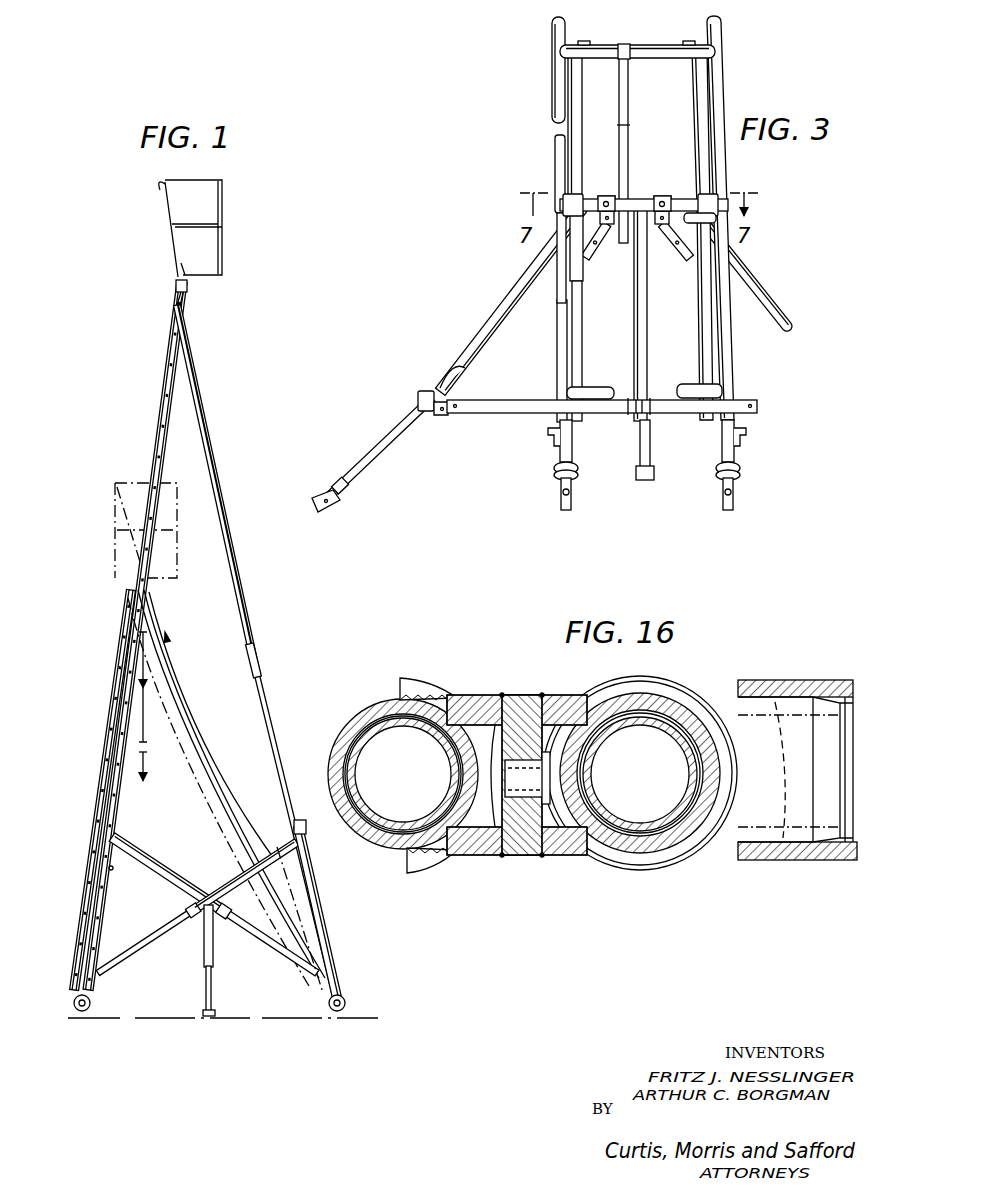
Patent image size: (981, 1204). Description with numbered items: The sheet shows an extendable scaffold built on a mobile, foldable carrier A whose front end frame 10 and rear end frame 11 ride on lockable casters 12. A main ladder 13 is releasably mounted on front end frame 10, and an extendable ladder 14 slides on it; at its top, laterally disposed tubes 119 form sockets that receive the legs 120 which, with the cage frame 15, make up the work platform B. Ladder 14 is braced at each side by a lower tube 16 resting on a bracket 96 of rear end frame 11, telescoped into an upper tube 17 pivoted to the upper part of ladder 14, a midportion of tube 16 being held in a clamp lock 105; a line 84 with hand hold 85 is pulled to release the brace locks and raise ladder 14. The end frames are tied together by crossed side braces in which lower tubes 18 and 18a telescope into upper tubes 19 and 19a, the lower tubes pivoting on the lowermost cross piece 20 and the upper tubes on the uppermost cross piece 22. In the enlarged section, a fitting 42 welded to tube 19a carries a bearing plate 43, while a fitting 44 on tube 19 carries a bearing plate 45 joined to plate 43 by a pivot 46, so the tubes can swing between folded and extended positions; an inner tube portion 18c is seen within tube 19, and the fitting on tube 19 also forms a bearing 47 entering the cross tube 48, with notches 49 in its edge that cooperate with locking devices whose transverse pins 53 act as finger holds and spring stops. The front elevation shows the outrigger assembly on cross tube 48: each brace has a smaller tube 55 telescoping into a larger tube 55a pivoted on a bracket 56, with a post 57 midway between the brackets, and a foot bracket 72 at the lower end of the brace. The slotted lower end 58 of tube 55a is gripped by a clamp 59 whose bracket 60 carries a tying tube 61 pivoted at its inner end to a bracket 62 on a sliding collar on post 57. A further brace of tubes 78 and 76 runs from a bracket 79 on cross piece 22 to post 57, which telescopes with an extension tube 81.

In FIG. 1, the front end frame 10 is at (105, 915).
In FIG. 3, the front end frame 10 is at (552, 95).
In FIG. 1, the rear end frame 11 is at (330, 945).
In FIG. 3, the rear end frame 11 is at (572, 440).
In FIG. 1, the casters 12 is at (82, 1012).
In FIG. 1, the main ladder 13 is at (118, 828).
In FIG. 1, the extendable ladder 14 is at (160, 377).
In FIG. 1, the cage or frame 15 is at (223, 247).
In FIG. 1, the lower tube 16 is at (268, 698).
In FIG. 1, the upper tube 17 is at (230, 477).
In FIG. 1, the lower tube 18 is at (128, 956).
In FIG. 3, the lower tube 18 is at (585, 310).
In FIG. 1, the lower tube 18a is at (238, 940).
In FIG. 3, the lower tube 18a is at (566, 330).
In FIG. 16, the lower tube 18a is at (373, 815).
In FIG. 16, the inner tube 18c is at (687, 738).
In FIG. 1, the upper tube 19 is at (235, 882).
In FIG. 3, the upper tube 19 is at (568, 118).
In FIG. 16, the upper tube 19 is at (660, 700).
In FIG. 1, the upper tube 19a is at (165, 868).
In FIG. 3, the upper tube 19a is at (555, 150).
In FIG. 16, the upper tube 19a is at (378, 712).
In FIG. 3, the lowermost cross piece 20 is at (687, 383).
In FIG. 3, the uppermost cross piece 22 is at (665, 45).
In FIG. 3, the fitting 42 is at (562, 201).
In FIG. 16, the fitting 42 is at (430, 684).
In FIG. 16, the bearing plate 43 is at (512, 852).
In FIG. 3, the fitting 44 is at (710, 198).
In FIG. 16, the fitting 44 is at (622, 680).
In FIG. 16, the bearing plate 45 is at (527, 698).
In FIG. 16, the pivot 46 is at (525, 792).
In FIG. 16, the bearing 47 is at (753, 698).
In FIG. 3, the cross tube 48 is at (600, 194).
In FIG. 16, the cross tube 48 is at (795, 858).
In FIG. 16, the notches 49 is at (773, 770).
In FIG. 3, the transverse pins 53 is at (655, 195).
In FIG. 1, the tube 55 is at (212, 990).
In FIG. 3, the tube 55 is at (372, 467).
In FIG. 1, the tube 55a is at (205, 945).
In FIG. 3, the tube 55a is at (779, 325).
In FIG. 3, the bracket 56 is at (610, 195).
In FIG. 3, the post 57 is at (648, 278).
In FIG. 3, the longitudinal slots 58 is at (440, 372).
In FIG. 3, the clamp 59 is at (418, 396).
In FIG. 3, the bracket 60 is at (436, 414).
In FIG. 3, the outrigger tying tube 61 is at (508, 386).
In FIG. 3, the bracket 62 is at (618, 388).
In FIG. 3, the foot bracket 72 is at (322, 513).
In FIG. 1, the tube 76 is at (112, 870).
In FIG. 3, the tube 76 is at (628, 166).
In FIG. 3, the tube 78 is at (628, 80).
In FIG. 3, the bracket 79 is at (636, 46).
In FIG. 3, the extension tube 81 is at (652, 445).
In FIG. 1, the line 84 is at (143, 742).
In FIG. 1, the hand hold 85 is at (143, 800).
In FIG. 3, the brackets 96 is at (552, 446).
In FIG. 1, the clamp lock 105 is at (304, 850).
In FIG. 1, the tubes 119 is at (187, 285).
In FIG. 1, the legs 120 is at (184, 262).
In FIG. 1, the carrier A is at (322, 916).
In FIG. 1, the work platform B is at (236, 204).